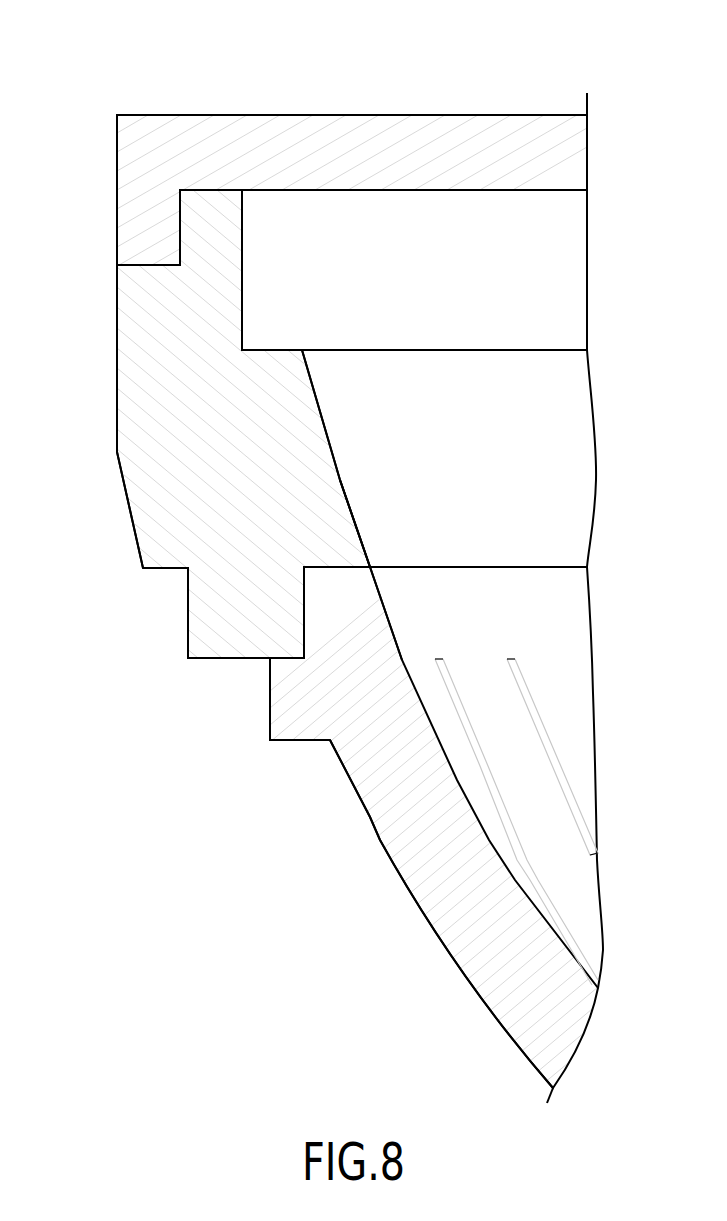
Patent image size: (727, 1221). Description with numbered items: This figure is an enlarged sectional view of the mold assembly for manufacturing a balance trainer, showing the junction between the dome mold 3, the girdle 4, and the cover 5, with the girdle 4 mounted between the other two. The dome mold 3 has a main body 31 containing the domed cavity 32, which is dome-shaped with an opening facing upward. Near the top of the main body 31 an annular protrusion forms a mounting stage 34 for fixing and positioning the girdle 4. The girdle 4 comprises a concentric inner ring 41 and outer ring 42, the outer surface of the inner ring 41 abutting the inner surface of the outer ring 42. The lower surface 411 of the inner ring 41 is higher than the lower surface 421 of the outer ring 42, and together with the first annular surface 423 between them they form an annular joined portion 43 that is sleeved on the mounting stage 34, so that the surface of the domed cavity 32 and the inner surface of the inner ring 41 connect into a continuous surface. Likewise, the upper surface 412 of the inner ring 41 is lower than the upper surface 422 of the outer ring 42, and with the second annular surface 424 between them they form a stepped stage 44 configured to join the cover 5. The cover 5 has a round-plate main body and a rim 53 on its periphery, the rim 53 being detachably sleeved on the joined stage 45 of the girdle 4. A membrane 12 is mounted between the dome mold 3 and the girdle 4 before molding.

The dome mold 3 is at (352, 875).
The girdle 4 is at (92, 497).
The cover 5 is at (367, 105).
The membrane 12 is at (505, 567).
The main body 31 is at (465, 950).
The domed cavity 32 is at (562, 700).
The mounting stage 34 is at (300, 717).
The inner ring 41 is at (332, 446).
The outer ring 42 is at (160, 410).
The annular joined portion 43 is at (343, 600).
The stepped stage 44 is at (276, 293).
The joined stage 45 is at (205, 225).
The rim 53 is at (145, 225).
The lower surface 411 is at (340, 565).
The upper surface 412 is at (281, 349).
The lower surface 421 is at (230, 660).
The upper surface 422 is at (140, 265).
The first annular surface 423 is at (305, 612).
The second annular surface 424 is at (243, 262).